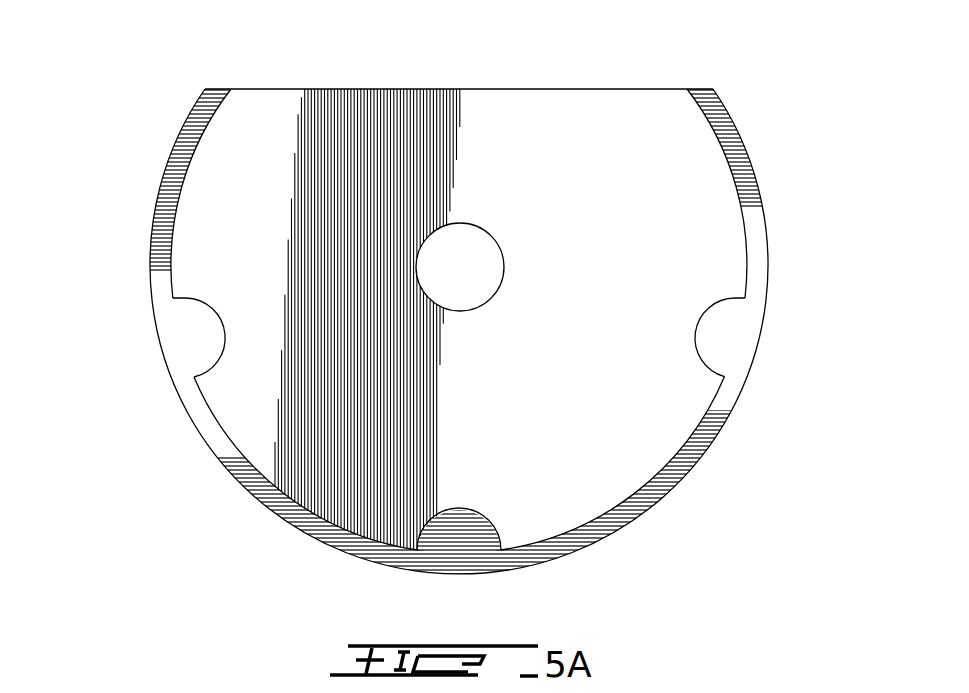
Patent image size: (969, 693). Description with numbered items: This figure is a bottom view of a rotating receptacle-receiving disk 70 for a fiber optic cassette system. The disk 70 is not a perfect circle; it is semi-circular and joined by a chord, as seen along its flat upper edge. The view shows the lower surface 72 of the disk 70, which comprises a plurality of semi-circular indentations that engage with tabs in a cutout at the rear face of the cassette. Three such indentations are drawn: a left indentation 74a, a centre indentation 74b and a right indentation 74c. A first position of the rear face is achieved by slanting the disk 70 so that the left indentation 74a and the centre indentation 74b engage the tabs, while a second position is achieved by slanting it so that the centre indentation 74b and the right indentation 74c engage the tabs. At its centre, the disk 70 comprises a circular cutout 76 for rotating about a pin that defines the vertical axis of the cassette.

The rotating receptacle-receiving disk 70 is at (158, 99).
The lower surface 72 is at (288, 143).
The left indentation 74a is at (197, 332).
The centre indentation 74b is at (455, 535).
The right indentation 74c is at (713, 330).
The circular cutout 76 is at (463, 260).